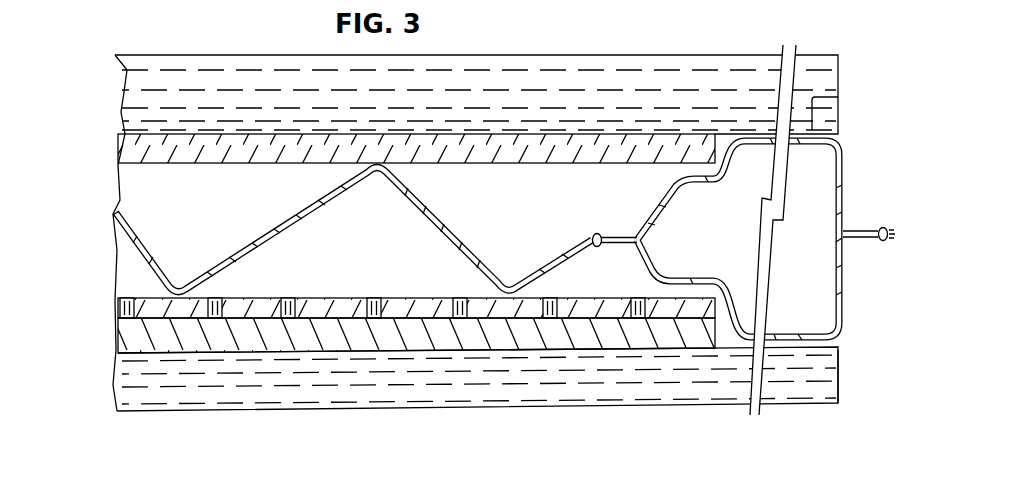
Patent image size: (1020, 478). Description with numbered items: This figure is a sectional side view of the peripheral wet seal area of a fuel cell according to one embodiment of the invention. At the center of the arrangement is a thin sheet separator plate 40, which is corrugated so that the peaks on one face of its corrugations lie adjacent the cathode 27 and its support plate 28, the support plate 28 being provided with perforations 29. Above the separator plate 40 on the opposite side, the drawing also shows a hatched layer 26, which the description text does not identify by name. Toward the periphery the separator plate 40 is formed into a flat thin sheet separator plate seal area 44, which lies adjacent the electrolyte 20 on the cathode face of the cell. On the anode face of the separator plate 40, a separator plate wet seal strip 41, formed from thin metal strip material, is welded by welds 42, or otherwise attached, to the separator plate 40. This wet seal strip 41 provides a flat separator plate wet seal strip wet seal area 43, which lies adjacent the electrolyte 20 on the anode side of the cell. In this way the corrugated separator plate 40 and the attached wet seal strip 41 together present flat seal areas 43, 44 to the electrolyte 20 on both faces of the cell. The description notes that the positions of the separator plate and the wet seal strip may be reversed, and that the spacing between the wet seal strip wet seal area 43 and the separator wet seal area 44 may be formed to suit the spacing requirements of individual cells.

The electrolyte 20 is at (173, 80).
The upper adhesive layer 26 is at (157, 150).
The cathode 27 is at (137, 337).
The support plate 28 is at (143, 296).
The perforations 29 is at (116, 308).
The thin sheet separator plate 40 is at (127, 244).
The separator plate wet seal strip 41 is at (846, 153).
The welds 42 is at (597, 231).
The separator plate wet seal strip wet seal area 43 is at (838, 97).
The thin sheet separator plate seal area 44 is at (822, 366).